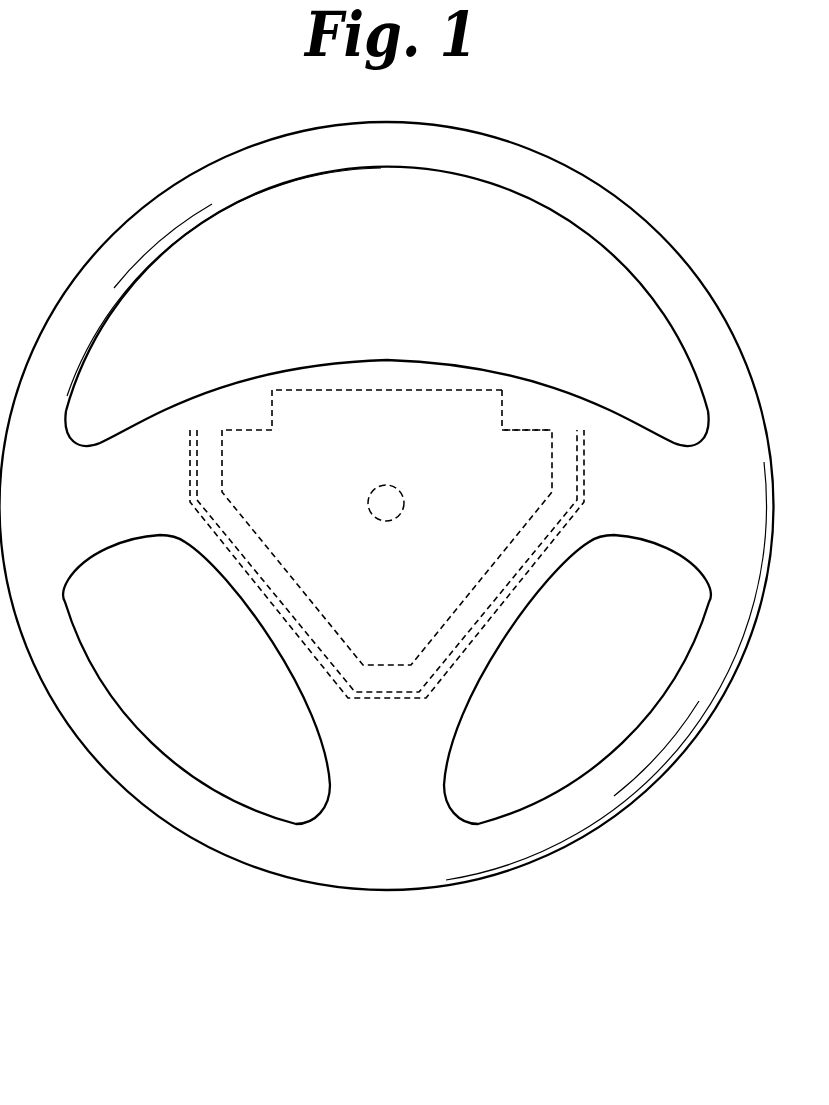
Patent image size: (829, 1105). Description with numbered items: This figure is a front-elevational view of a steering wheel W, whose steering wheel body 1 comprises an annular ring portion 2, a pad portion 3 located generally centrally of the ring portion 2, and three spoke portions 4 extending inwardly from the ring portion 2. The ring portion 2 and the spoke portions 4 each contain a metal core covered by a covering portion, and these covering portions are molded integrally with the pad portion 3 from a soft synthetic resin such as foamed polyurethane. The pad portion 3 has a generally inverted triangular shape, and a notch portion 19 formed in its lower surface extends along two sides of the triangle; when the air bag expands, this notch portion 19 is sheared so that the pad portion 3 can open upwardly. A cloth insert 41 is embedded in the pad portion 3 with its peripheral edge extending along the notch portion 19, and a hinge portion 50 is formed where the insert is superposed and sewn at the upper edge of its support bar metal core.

The steering wheel W is at (590, 143).
The steering wheel body 1 is at (641, 217).
The annular ring portion 2 is at (683, 258).
The pad portion 3 is at (441, 362).
The spoke portions 4 is at (107, 548).
The notch portion 19 is at (493, 613).
The cloth insert 41 is at (340, 389).
The hinge portion 50 is at (488, 412).